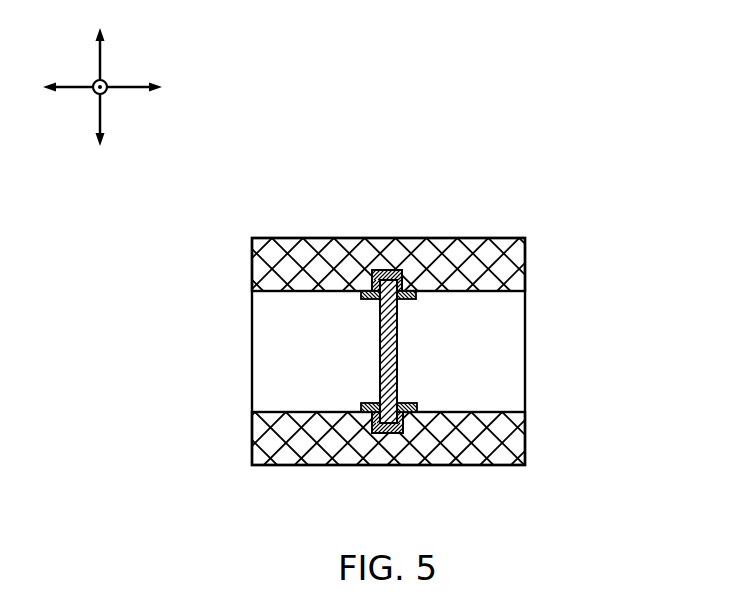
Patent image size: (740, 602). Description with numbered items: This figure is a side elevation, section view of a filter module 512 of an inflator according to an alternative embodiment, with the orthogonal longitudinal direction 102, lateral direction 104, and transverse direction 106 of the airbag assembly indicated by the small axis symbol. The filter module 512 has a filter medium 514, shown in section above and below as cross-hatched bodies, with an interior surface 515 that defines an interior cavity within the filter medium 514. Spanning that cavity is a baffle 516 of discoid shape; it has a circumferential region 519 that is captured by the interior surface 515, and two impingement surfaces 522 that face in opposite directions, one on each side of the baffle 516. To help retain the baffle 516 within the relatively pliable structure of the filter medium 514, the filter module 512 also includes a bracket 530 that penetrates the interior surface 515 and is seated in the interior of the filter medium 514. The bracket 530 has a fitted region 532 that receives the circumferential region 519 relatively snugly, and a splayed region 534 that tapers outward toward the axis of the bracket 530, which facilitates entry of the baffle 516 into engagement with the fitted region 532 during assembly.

The longitudinal direction 102 is at (137, 80).
The lateral direction 104 is at (108, 91).
The transverse direction 106 is at (103, 70).
The filter module 512 is at (537, 170).
The filter medium 514 is at (285, 230).
The interior surface 515 is at (440, 412).
The baffle 516 is at (400, 367).
The circumferential region 519 is at (391, 433).
The impingement surfaces 522 is at (397, 337).
The bracket 530 is at (397, 258).
The fitted region 532 is at (382, 289).
The splayed region 534 is at (401, 299).